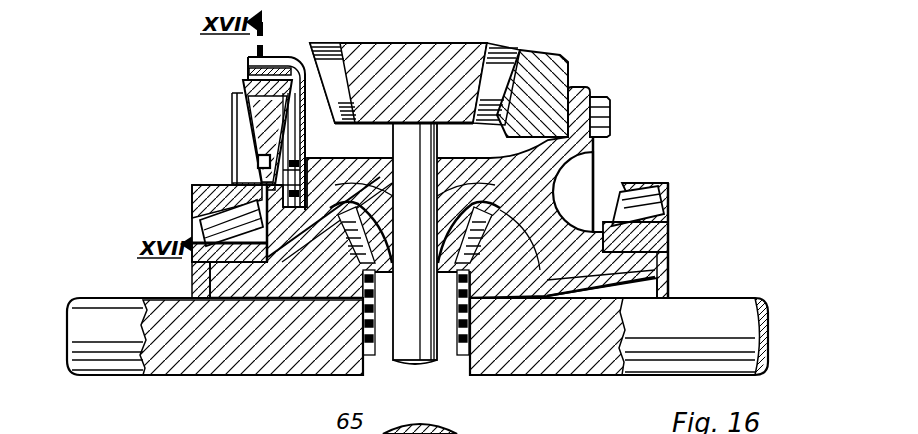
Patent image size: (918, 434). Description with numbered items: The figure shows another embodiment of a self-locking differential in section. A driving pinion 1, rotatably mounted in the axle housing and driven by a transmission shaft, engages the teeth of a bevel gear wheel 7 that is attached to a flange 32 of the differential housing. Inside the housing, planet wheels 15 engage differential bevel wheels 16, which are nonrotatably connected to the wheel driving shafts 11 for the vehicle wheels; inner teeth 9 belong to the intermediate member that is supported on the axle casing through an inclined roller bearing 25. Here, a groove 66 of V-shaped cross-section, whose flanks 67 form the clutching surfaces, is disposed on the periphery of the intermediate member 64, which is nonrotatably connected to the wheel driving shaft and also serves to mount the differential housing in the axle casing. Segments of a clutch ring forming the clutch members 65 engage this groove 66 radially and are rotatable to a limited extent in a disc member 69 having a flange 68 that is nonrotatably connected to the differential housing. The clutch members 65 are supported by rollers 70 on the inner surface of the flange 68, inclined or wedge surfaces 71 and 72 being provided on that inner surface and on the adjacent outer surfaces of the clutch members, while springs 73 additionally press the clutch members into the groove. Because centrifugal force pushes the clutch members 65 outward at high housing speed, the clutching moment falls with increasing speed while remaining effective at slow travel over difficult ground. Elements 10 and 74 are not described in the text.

The driving pinion 1 is at (457, 68).
The bevel gear wheel 7 is at (540, 77).
The inner teeth 9 is at (196, 310).
The axle shaft 10 is at (213, 365).
The wheel driving shaft 11 is at (250, 345).
The planet wheel 15 is at (383, 197).
The differential bevel wheel 16 is at (487, 240).
The inclined roller bearing 25 is at (213, 216).
The flange 32 is at (580, 105).
The intermediate member 64 is at (263, 193).
The clutch member 65 is at (257, 93).
The groove 66 is at (257, 162).
The flank 67 is at (265, 112).
The flange 68 is at (268, 77).
The disc member 69 is at (310, 93).
The roller 70 is at (413, 423).
The inclined surface 71 is at (447, 432).
The inclined surface 72 is at (502, 420).
The spring 73 is at (554, 428).
The ring member 74 is at (310, 428).